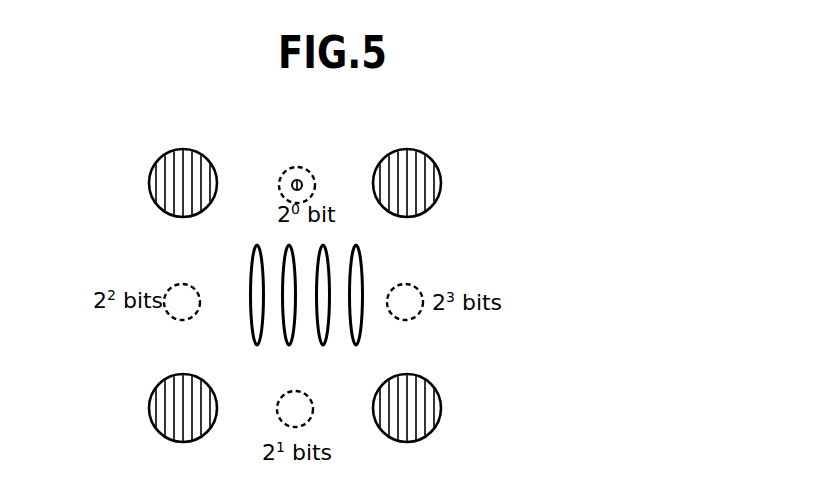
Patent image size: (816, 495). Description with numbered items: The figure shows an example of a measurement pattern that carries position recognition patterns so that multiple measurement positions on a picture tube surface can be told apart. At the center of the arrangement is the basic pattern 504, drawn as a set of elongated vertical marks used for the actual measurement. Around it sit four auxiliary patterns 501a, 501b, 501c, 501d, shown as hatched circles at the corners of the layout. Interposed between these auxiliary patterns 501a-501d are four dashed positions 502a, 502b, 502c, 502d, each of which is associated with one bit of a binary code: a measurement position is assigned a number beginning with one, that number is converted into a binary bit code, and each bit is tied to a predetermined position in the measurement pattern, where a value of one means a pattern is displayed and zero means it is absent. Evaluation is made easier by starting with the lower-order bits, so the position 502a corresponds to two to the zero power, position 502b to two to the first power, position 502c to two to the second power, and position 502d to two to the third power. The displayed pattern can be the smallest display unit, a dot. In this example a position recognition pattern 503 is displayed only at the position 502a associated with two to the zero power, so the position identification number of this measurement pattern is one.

The auxiliary pattern 501a is at (192, 150).
The auxiliary pattern 501b is at (420, 150).
The auxiliary pattern 501c is at (189, 375).
The auxiliary pattern 501d is at (420, 377).
The pattern position 502a is at (298, 168).
The pattern position 502b is at (297, 392).
The pattern position 502c is at (183, 284).
The pattern position 502d is at (411, 285).
The position recognition pattern 503 is at (301, 180).
The basic pattern 504 is at (257, 245).